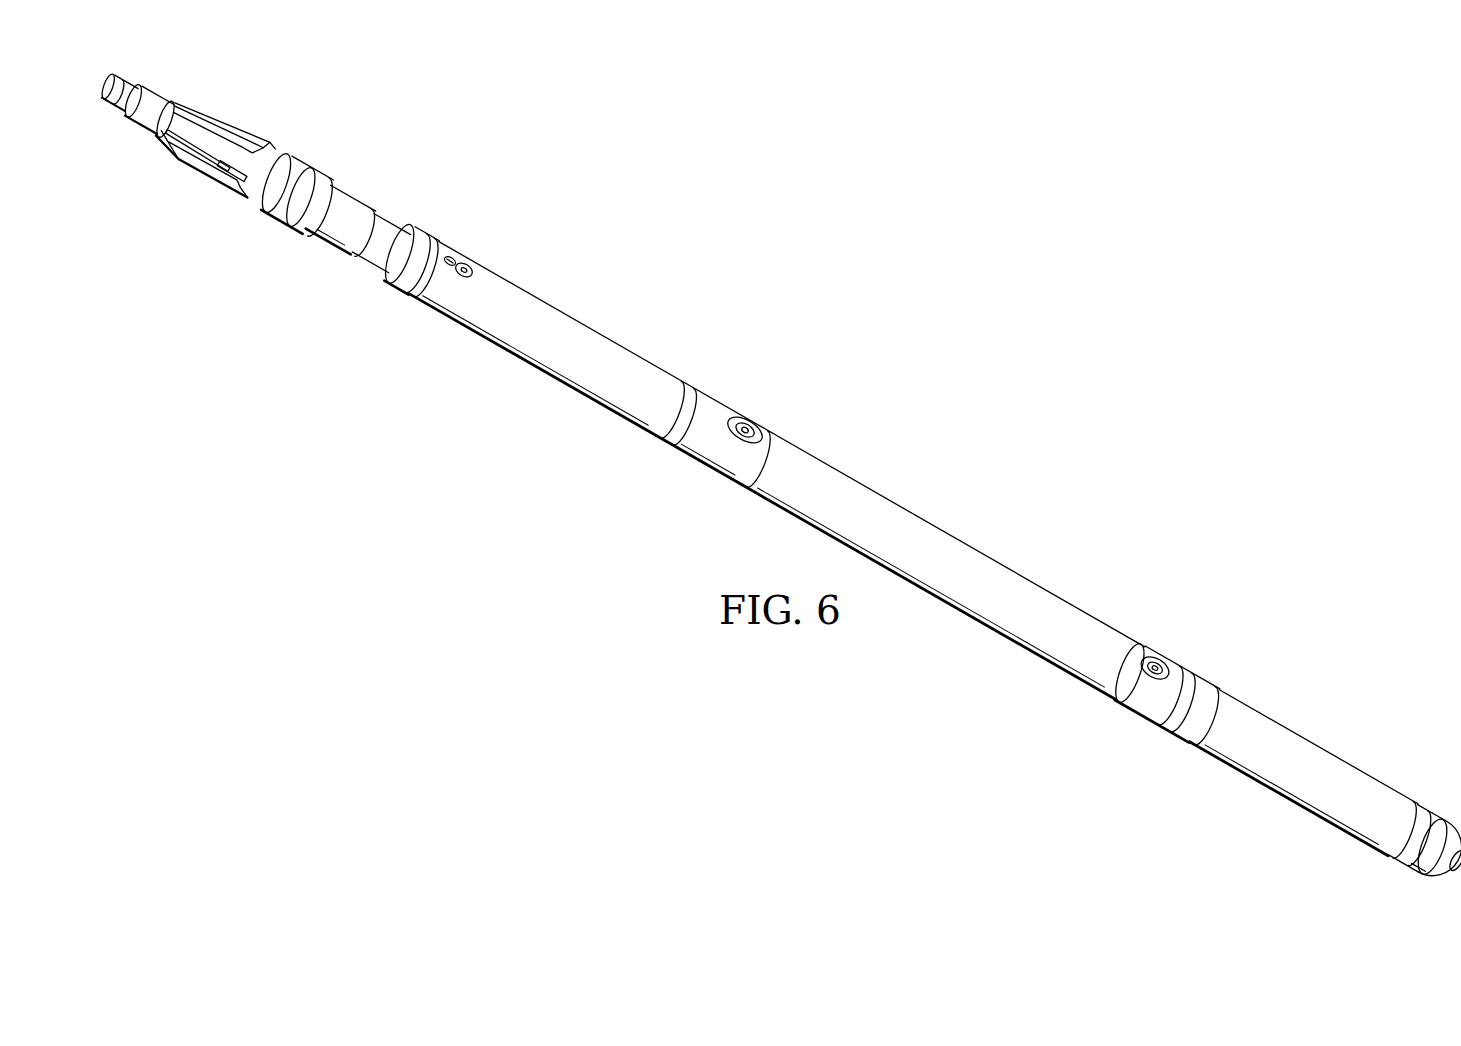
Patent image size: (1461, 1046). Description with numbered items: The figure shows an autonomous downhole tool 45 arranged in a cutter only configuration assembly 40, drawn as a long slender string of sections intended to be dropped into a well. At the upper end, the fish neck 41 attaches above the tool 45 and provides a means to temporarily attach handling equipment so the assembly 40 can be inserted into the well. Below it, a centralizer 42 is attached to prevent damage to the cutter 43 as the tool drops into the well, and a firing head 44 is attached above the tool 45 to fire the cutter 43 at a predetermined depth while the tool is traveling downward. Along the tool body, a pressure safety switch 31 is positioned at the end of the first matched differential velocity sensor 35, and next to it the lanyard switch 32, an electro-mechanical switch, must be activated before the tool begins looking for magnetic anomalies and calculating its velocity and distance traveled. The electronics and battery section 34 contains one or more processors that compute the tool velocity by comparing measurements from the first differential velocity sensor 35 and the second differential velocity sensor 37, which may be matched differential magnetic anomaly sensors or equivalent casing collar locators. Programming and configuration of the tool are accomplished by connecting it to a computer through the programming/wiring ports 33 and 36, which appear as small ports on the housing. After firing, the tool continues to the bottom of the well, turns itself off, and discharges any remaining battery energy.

The cutter only configuration assembly 40 is at (851, 245).
The fish neck 41 is at (113, 70).
The centralizer 42 is at (238, 124).
The cutter 43 is at (294, 157).
The firing head 44 is at (389, 222).
The autonomous tool 45 is at (404, 293).
The pressure safety switch 31 is at (452, 256).
The lanyard switch 32 is at (470, 264).
The programming/wiring port 33 is at (746, 428).
The electronics and battery section 34 is at (961, 540).
The first matched differential velocity sensor 35 is at (600, 332).
The programming/wiring port 36 is at (1157, 663).
The second differential velocity sensor 37 is at (1323, 752).